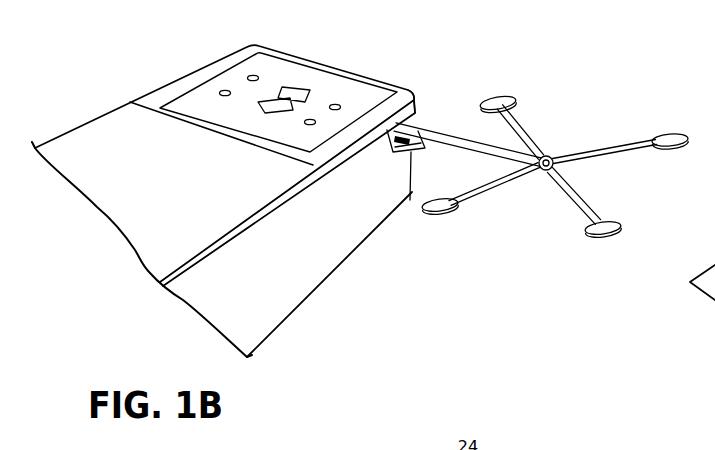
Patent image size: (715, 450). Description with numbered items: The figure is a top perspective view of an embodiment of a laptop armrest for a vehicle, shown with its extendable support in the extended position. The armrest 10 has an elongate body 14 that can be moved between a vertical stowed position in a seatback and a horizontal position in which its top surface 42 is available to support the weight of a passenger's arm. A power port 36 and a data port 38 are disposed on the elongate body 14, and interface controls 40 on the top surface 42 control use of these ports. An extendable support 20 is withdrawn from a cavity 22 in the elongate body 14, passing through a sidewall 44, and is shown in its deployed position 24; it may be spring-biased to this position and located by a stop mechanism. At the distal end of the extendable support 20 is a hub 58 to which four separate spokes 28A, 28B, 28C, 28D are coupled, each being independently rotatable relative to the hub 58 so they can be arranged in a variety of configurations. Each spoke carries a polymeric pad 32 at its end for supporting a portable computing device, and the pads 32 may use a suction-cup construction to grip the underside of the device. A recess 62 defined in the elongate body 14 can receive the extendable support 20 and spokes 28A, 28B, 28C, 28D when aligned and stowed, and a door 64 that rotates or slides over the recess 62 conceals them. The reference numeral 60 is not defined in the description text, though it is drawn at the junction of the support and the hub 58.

The armrest 10 is at (83, 105).
The elongate body 14 is at (223, 201).
The extendable support 20 is at (452, 133).
The cavity 22 is at (390, 132).
The deployed position 24 is at (441, 104).
The spoke 28A is at (524, 137).
The spoke 28B is at (594, 157).
The spoke 28C is at (578, 198).
The spoke 28D is at (513, 184).
The polymeric pads 32 is at (506, 100).
The power port 36 is at (248, 76).
The data port 38 is at (220, 91).
The interface controls 40 is at (286, 86).
The top surface 42 is at (151, 200).
The sidewall 44 is at (233, 290).
The hub 58 is at (555, 156).
The pivot 60 is at (537, 162).
The recess 62 is at (423, 98).
The door 64 is at (400, 152).